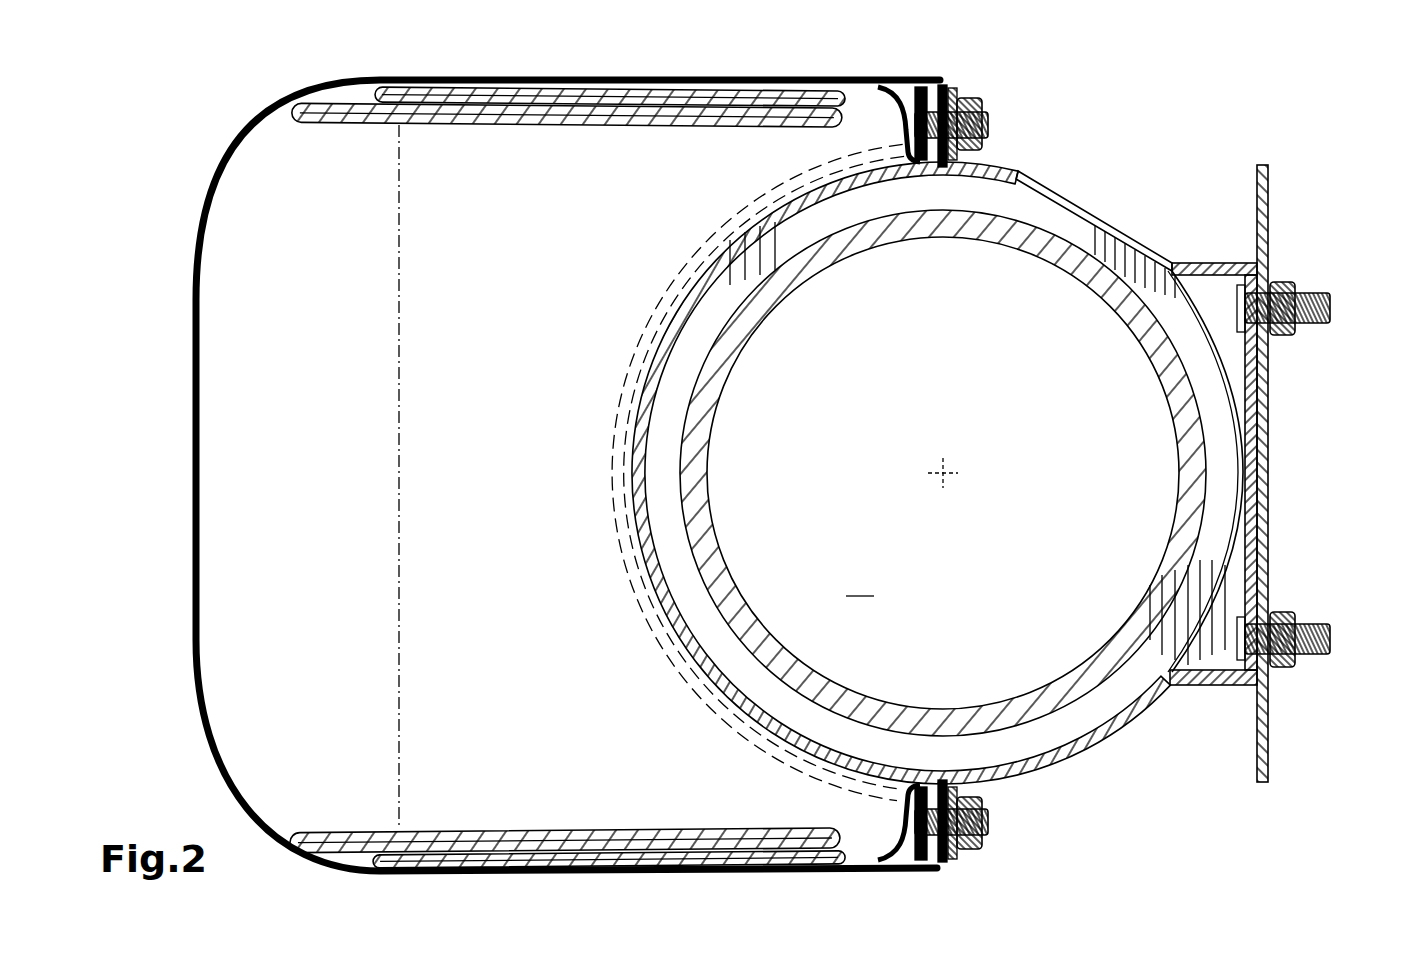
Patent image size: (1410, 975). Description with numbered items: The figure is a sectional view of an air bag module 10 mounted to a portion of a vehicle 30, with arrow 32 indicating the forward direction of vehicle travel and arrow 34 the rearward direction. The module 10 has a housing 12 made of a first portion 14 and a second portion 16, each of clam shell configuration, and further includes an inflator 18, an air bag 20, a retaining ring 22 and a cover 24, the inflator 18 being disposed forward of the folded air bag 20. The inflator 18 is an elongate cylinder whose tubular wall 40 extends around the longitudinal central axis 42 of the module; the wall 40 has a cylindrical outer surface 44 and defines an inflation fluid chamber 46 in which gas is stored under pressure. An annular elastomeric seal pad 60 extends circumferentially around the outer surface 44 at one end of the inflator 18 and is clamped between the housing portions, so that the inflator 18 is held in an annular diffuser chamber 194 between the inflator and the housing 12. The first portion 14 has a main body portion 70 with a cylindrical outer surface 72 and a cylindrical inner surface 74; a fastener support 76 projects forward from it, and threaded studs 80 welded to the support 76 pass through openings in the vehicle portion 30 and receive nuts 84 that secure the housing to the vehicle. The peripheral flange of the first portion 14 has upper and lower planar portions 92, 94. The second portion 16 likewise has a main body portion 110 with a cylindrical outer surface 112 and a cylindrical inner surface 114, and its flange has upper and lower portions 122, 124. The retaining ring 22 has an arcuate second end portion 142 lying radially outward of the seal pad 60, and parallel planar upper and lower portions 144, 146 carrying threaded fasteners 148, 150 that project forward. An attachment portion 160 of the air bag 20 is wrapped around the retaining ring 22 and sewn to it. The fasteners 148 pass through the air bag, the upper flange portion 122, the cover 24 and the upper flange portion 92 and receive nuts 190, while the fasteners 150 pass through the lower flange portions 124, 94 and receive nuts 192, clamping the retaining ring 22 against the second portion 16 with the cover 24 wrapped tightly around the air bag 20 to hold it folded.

The air bag module 10 is at (1278, 125).
The housing 12 is at (1205, 160).
The first portion of the housing 14 is at (1024, 166).
The second portion of the housing 16 is at (678, 290).
The inflator 18 is at (668, 516).
The air bag 20 is at (488, 132).
The retaining ring 22 is at (638, 330).
The cover 24 is at (248, 806).
The vehicle portion 30 is at (1275, 212).
The arrow 32 is at (1318, 868).
The arrow 34 is at (1165, 870).
The tubular wall 40 is at (733, 592).
The longitudinal central axis 42 is at (945, 478).
The cylindrical outer surface 44 is at (688, 386).
The inflation fluid chamber 46 is at (859, 584).
The second annular elastomeric seal pad 60 is at (662, 455).
The main body portion 70 is at (1078, 205).
The cylindrical outer surface 72 is at (1100, 213).
The cylindrical inner surface 74 is at (1090, 230).
The fastener support 76 is at (1215, 262).
The threaded studs 80 is at (1332, 298).
The nuts 84 is at (1288, 283).
The upper planar flange portion 92 is at (968, 98).
The lower planar flange portion 94 is at (965, 856).
The main body portion 110 is at (735, 238).
The cylindrical outer surface 112 is at (770, 215).
The cylindrical inner surface 114 is at (797, 205).
The upper flange portion 122 is at (941, 85).
The lower flange portion 124 is at (940, 862).
The arcuate second end portion 142 is at (660, 640).
The upper planar portion 144 is at (918, 88).
The lower planar portion 146 is at (912, 868).
The fasteners 148 is at (988, 124).
The fasteners 150 is at (990, 824).
The attachment portion 160 is at (890, 100).
The nuts 190 is at (956, 95).
The nuts 192 is at (966, 855).
The diffuser chamber 194 is at (1188, 318).